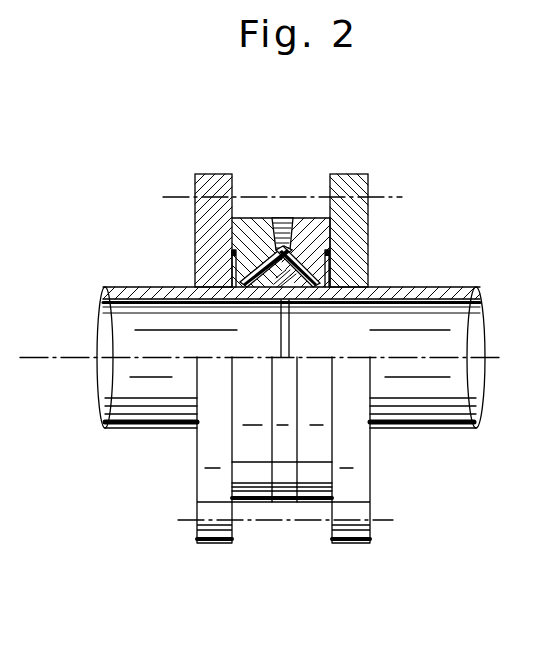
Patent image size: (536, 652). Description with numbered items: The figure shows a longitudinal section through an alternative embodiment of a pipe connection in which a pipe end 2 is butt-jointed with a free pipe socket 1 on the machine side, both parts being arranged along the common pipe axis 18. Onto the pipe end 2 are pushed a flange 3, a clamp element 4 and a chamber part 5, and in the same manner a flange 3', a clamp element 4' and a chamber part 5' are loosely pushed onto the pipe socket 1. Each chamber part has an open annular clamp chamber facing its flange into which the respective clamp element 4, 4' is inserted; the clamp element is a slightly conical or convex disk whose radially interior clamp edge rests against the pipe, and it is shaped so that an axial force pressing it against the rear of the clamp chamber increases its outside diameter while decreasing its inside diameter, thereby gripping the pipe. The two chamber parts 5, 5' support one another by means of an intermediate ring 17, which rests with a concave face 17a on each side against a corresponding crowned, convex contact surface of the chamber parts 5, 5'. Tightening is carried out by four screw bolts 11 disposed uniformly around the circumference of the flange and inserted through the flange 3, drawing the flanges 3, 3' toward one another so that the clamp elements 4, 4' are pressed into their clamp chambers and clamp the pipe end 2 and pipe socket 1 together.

The pipe socket 1 is at (450, 408).
The pipe end 2 is at (125, 413).
The flange 3 is at (183, 450).
The flange 3' is at (384, 450).
The clamp element 4 is at (194, 251).
The clamp element 4' is at (369, 257).
The chamber part 5 is at (250, 517).
The chamber part 5' is at (325, 517).
The screw bolts 11 is at (402, 198).
The intermediate ring 17 is at (283, 480).
The concave face 17a is at (268, 228).
The pipe axis 18 is at (38, 358).